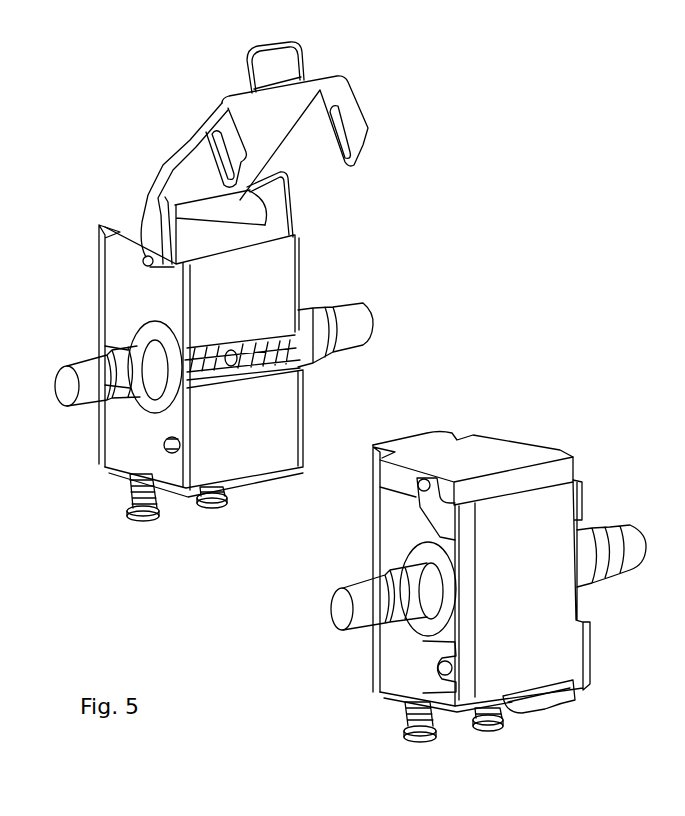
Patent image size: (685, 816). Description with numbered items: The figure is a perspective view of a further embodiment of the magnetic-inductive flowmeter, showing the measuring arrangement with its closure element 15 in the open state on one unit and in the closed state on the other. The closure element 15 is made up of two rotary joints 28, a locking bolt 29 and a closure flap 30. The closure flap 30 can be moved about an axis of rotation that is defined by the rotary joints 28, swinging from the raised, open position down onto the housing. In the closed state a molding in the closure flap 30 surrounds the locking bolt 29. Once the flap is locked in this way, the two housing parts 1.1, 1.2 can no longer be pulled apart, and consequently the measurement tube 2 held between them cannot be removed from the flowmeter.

The housing part 1.1 is at (278, 260).
The housing part 1.2 is at (167, 474).
The measurement tube 2 is at (360, 338).
The closure element 15 is at (288, 154).
The rotary joints 28 is at (146, 256).
The locking bolt 29 is at (166, 444).
The closure flap 30 is at (318, 181).